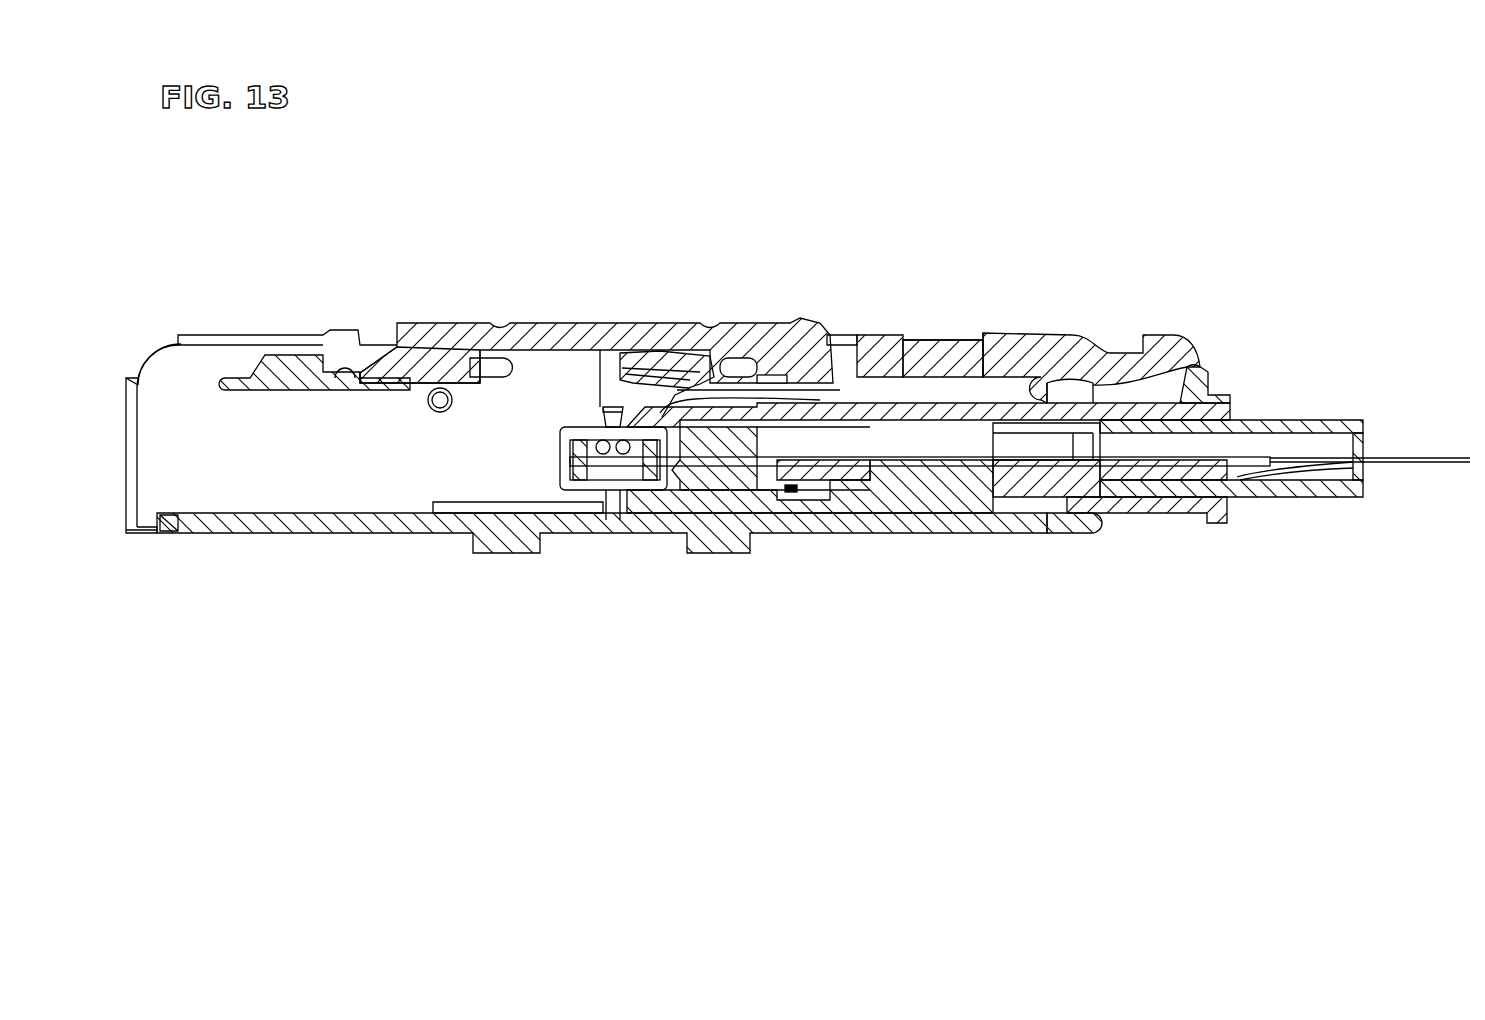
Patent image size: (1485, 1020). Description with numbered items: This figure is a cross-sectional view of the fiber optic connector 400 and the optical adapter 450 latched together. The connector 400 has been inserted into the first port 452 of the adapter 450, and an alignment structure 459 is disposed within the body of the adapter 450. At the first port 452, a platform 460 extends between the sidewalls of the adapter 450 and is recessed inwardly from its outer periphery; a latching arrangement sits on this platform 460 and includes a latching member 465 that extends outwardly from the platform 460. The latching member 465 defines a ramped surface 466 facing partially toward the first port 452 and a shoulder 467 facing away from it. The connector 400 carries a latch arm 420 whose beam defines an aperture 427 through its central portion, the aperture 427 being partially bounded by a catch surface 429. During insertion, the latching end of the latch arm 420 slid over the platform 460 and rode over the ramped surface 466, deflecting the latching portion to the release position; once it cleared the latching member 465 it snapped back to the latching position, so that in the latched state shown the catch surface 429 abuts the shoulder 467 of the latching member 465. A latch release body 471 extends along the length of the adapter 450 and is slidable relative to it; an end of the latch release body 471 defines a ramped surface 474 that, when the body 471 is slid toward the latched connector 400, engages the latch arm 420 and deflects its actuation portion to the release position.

The fiber optic connector 400 is at (1218, 376).
The latch arm 420 is at (948, 366).
The aperture 427 is at (983, 370).
The catch surface 429 is at (915, 368).
The optical adapter 450 is at (565, 540).
The first port 452 is at (153, 488).
The alignment structure 459 is at (659, 483).
The platform 460 is at (337, 378).
The latching member 465 is at (300, 365).
The ramped surface 466 is at (962, 368).
The shoulder 467 is at (885, 370).
The latch release body 471 is at (590, 335).
The ramped surface 474 is at (370, 358).